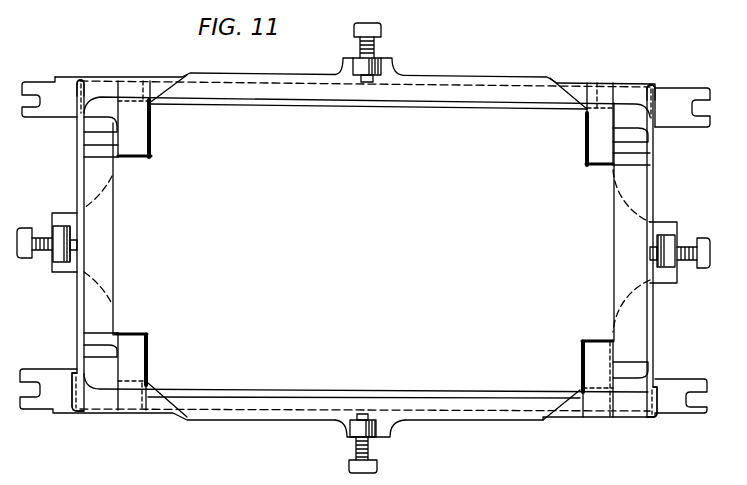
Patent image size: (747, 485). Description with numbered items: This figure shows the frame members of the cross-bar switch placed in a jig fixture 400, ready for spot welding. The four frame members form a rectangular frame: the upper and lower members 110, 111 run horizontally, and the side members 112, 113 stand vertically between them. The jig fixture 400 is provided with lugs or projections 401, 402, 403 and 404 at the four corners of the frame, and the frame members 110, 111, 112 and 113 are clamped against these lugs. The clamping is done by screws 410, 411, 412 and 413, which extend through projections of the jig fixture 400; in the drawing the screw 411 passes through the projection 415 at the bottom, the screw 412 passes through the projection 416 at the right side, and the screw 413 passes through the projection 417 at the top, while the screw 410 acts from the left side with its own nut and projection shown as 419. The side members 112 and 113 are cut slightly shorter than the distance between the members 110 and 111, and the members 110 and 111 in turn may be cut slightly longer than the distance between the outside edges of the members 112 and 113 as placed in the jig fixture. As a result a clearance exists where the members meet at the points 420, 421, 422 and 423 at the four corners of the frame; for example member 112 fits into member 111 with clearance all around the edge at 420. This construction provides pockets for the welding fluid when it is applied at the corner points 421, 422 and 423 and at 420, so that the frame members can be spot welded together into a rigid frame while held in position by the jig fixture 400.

The frame member 110 is at (312, 106).
The frame member 111 is at (314, 391).
The frame member 112 is at (102, 239).
The frame member 113 is at (622, 252).
The jig fixture 400 is at (230, 420).
The lug 401 is at (135, 137).
The lug 402 is at (132, 357).
The lug 403 is at (595, 143).
The lug 404 is at (592, 362).
The screw 410 is at (23, 229).
The screw 411 is at (378, 465).
The screw 412 is at (702, 240).
The screw 413 is at (382, 30).
The projection 415 is at (383, 434).
The projection 416 is at (664, 244).
The projection 417 is at (383, 65).
The left nut 419 is at (60, 263).
The clearance point 420 is at (80, 412).
The clearance point 421 is at (84, 88).
The clearance point 422 is at (643, 418).
The clearance point 423 is at (645, 86).